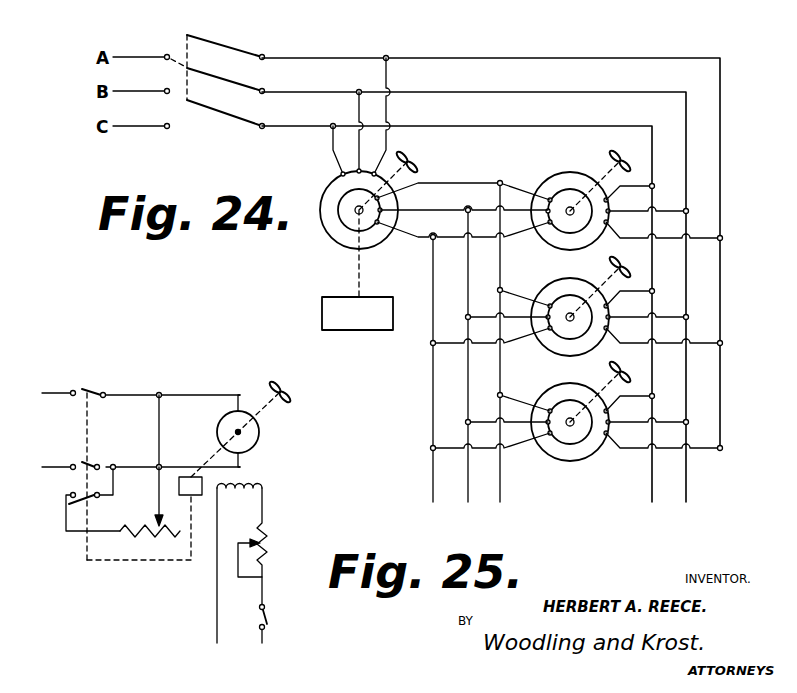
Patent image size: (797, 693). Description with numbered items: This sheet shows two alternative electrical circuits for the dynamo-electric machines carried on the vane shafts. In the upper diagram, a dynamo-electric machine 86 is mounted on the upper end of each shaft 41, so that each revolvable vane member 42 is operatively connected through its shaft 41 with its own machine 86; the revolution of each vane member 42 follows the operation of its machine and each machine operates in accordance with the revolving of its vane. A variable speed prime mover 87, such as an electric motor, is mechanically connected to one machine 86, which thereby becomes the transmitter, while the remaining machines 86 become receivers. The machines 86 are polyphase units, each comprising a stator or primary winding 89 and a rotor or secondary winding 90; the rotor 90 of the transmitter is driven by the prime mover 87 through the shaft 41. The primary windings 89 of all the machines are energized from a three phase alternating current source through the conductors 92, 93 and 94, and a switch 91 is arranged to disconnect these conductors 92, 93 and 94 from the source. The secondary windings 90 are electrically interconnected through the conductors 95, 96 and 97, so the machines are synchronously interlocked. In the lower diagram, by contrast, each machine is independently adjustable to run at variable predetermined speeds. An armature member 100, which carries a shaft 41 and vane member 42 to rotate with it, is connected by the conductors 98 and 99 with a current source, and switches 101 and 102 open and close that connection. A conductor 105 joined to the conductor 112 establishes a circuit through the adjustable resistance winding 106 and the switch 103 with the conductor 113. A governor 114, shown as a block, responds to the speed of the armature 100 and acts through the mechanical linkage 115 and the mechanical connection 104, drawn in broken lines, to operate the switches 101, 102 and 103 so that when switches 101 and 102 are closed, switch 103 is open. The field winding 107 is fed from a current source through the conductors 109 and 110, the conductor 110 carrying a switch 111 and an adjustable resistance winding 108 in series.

In FIG. 24, the shaft 41 is at (358, 266).
In FIG. 25, the shaft 41 is at (264, 408).
In FIG. 24, the revolvable vane member 42 is at (408, 168).
In FIG. 25, the revolvable vane member 42 is at (286, 390).
In FIG. 24, the dynamo-electric machine 86 is at (450, 311).
In FIG. 24, the variable speed prime mover 87 is at (357, 313).
In FIG. 24, the stator or primary winding 89 is at (333, 173).
In FIG. 24, the rotor or secondary winding 90 is at (338, 227).
In FIG. 24, the switch 91 is at (189, 48).
In FIG. 24, the conductor 92 is at (564, 58).
In FIG. 24, the conductor 93 is at (575, 92).
In FIG. 24, the conductor 94 is at (596, 126).
In FIG. 24, the conductor 95 is at (458, 178).
In FIG. 24, the conductor 96 is at (445, 208).
In FIG. 24, the conductor 97 is at (424, 236).
In FIG. 25, the conductor 98 is at (62, 388).
In FIG. 25, the conductor 99 is at (62, 467).
In FIG. 25, the armature member 100 is at (259, 432).
In FIG. 25, the switch 101 is at (76, 390).
In FIG. 25, the switch 102 is at (84, 464).
In FIG. 25, the switch 103 is at (82, 502).
In FIG. 25, the mechanical connection 104 is at (86, 412).
In FIG. 25, the conductor 105 is at (158, 448).
In FIG. 25, the adjustable resistance winding 106 is at (104, 534).
In FIG. 25, the field winding 107 is at (250, 482).
In FIG. 25, the adjustable resistance winding 108 is at (267, 533).
In FIG. 25, the conductor 109 is at (217, 636).
In FIG. 25, the conductor 110 is at (259, 634).
In FIG. 25, the switch 111 is at (266, 614).
In FIG. 25, the conductor 112 is at (136, 390).
In FIG. 25, the conductor 113 is at (112, 484).
In FIG. 25, the governor 114 is at (191, 486).
In FIG. 25, the mechanical linkage 115 is at (124, 561).